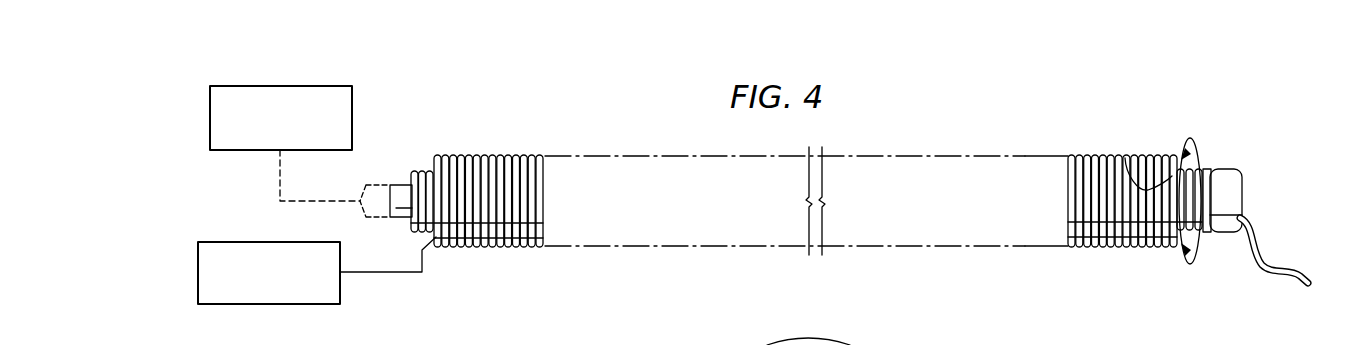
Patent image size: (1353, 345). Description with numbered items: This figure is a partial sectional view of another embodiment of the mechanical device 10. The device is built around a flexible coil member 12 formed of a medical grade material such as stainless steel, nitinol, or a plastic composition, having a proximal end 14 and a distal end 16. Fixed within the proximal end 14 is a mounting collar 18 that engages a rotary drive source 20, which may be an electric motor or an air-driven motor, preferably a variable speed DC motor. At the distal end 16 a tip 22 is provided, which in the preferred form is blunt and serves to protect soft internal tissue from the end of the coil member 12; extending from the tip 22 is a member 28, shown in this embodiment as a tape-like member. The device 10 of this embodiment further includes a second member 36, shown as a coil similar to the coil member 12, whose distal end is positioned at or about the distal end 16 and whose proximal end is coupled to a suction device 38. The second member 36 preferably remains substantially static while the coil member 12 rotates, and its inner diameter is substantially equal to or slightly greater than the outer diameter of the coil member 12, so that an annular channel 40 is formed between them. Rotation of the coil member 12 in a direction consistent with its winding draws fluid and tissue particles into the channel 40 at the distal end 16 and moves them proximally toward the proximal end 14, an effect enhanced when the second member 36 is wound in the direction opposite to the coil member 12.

The mechanical device 10 is at (936, 132).
The flexible coil member 12 is at (424, 171).
The proximal end 14 is at (489, 260).
The distal end 16 is at (1136, 260).
The mounting collar 18 is at (403, 185).
The rotary drive source 20 is at (210, 113).
The tip 22 is at (1224, 170).
The member 28 is at (1300, 269).
The second member 36 is at (487, 155).
The suction device 38 is at (198, 278).
The annular channel 40 is at (1137, 160).